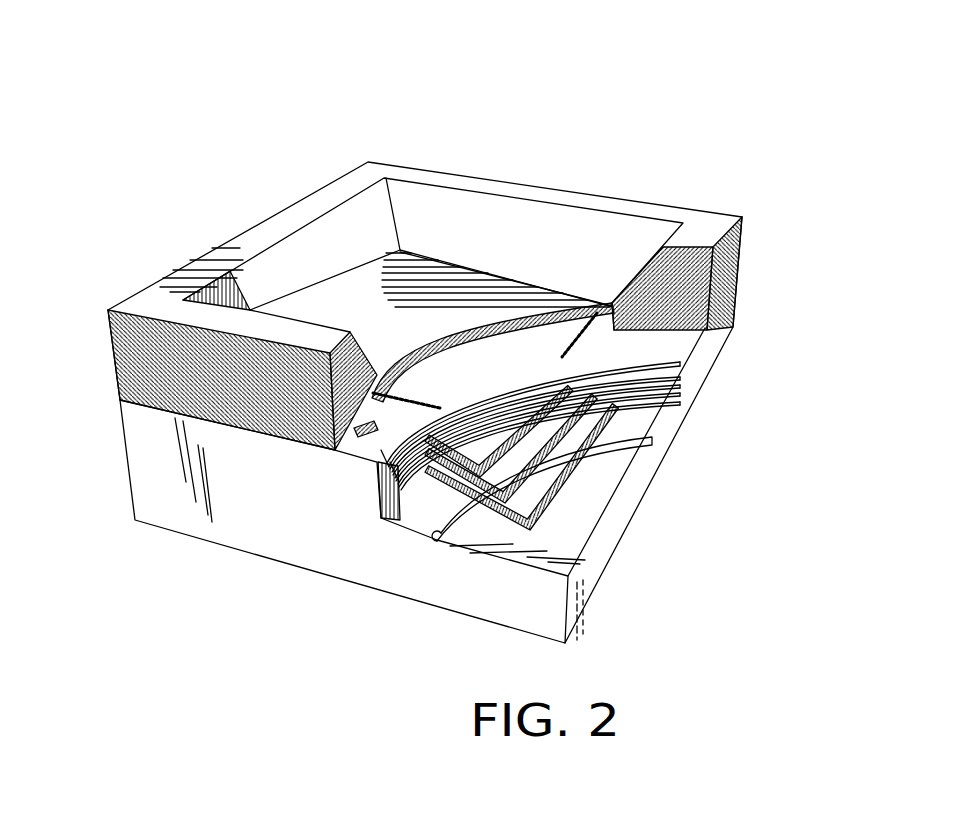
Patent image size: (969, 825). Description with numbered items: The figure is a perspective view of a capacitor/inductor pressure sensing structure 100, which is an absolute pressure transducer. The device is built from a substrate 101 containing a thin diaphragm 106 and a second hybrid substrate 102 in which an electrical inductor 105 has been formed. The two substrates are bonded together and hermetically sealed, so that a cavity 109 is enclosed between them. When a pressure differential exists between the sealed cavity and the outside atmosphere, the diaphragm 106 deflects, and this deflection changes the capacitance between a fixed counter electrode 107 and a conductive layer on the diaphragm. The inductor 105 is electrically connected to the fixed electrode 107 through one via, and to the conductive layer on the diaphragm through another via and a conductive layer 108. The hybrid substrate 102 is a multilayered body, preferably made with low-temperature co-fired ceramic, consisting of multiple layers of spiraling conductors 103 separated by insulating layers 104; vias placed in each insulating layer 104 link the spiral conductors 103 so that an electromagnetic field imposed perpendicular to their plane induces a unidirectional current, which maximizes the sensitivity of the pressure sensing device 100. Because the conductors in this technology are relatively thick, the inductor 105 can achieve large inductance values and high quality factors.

The pressure sensing structure 100 is at (358, 118).
The substrate 101 is at (712, 222).
The second hybrid substrate 102 is at (717, 337).
The spiraling conductors 103 is at (630, 467).
The insulating layers 104 is at (428, 500).
The electrical inductor 105 is at (557, 485).
The thin diaphragm 106 is at (370, 330).
The fixed counter electrode 107 is at (425, 383).
The conductive layer 108 is at (377, 443).
The cavity 109 is at (597, 313).